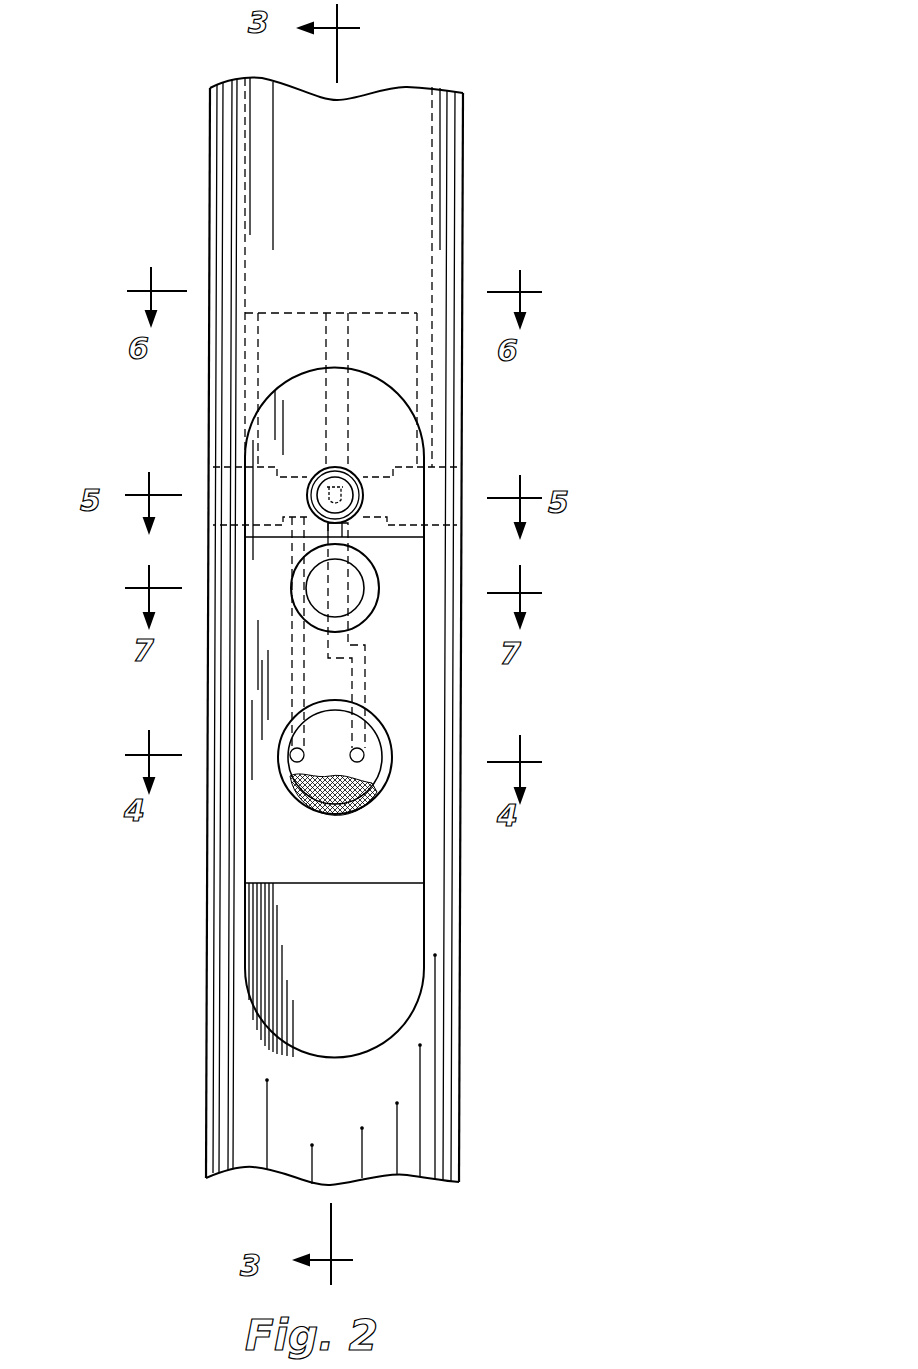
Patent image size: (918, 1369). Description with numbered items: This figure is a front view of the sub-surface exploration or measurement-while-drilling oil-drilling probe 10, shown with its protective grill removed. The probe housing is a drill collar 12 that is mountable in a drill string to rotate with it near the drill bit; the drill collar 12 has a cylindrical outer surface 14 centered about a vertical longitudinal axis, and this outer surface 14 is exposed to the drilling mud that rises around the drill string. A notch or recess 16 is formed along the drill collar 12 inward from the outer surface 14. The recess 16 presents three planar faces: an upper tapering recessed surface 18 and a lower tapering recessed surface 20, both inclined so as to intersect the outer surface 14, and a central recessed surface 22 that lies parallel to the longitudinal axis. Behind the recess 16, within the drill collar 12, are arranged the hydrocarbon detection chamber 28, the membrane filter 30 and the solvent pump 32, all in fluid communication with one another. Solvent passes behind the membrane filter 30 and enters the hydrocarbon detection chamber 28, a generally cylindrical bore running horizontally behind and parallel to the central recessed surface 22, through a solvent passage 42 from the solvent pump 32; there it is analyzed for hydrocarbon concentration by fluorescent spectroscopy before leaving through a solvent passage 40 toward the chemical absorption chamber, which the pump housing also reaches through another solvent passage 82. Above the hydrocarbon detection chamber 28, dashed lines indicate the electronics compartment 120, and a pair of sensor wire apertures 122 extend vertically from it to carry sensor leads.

The oil-drilling probe 10 is at (172, 228).
The drill collar 12 is at (466, 972).
The cylindrical outer surface 14 is at (408, 1098).
The recess 16 is at (411, 853).
The upper tapering recessed surface 18 is at (285, 436).
The lower tapering recessed surface 20 is at (302, 953).
The central recessed surface 22 is at (258, 845).
The hydrocarbon detection chamber 28 is at (365, 470).
The membrane filter 30 is at (310, 800).
The solvent pump 32 is at (300, 588).
The solvent passage 40 is at (297, 688).
The solvent passage 42 is at (342, 537).
The solvent passage 82 is at (362, 682).
The electronics compartment 120 is at (270, 352).
The sensor wire apertures 122 is at (245, 382).